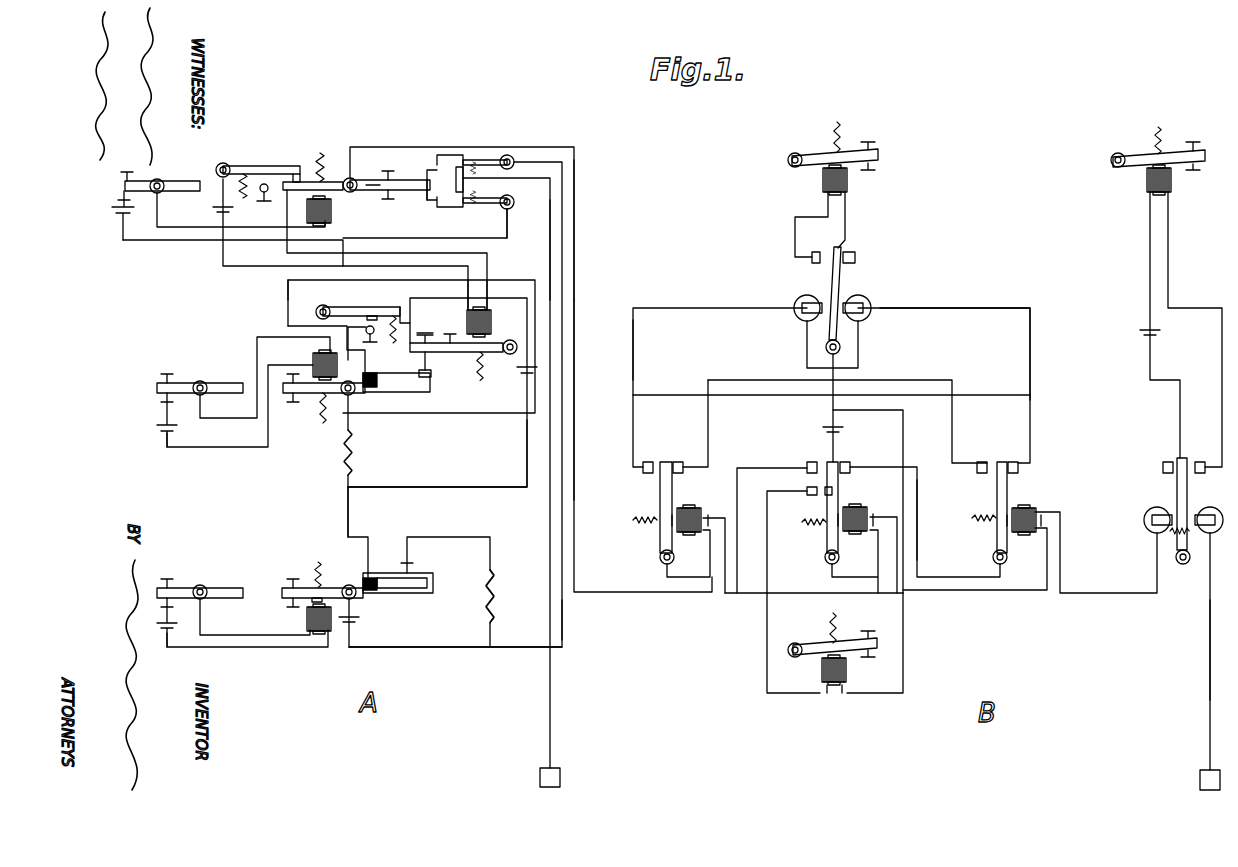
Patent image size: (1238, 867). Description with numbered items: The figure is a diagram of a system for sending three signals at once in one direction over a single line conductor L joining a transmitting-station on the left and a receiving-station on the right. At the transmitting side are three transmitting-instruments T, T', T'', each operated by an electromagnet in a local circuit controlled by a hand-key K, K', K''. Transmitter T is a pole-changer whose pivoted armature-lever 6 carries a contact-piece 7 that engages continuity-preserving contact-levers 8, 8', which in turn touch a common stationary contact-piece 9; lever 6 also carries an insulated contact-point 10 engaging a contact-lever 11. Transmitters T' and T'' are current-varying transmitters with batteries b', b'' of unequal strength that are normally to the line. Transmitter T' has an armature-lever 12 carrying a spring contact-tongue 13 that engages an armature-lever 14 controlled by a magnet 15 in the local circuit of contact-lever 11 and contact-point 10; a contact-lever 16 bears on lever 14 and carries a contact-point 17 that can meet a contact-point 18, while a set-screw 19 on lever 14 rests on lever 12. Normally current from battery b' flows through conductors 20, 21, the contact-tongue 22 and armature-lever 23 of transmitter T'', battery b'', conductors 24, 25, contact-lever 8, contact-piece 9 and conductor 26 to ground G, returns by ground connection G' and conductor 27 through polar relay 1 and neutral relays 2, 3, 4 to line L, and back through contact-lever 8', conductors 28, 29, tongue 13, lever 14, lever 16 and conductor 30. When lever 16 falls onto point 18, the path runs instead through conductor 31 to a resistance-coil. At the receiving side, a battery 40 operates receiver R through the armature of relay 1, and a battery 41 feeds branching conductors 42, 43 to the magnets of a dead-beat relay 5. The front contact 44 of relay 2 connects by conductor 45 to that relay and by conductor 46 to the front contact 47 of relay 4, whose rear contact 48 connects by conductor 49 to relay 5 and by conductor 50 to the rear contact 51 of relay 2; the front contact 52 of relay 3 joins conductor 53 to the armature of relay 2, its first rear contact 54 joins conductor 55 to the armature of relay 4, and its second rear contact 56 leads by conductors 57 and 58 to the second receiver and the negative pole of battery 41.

The polar relay 1 is at (1183, 511).
The neutral relay 2 is at (1007, 513).
The neutral relay 3 is at (837, 513).
The neutral relay 4 is at (670, 513).
The dead-beat relay 5 is at (841, 300).
The armature-lever 6 is at (366, 185).
The contact-piece 7 is at (424, 192).
The continuity-preserving contact-lever 8 is at (479, 144).
The continuity-preserving contact-lever 8' is at (479, 210).
The stationary contact-piece 9 is at (451, 181).
The contact-point 10 is at (308, 211).
The continuity-preserving contact-lever 11 is at (284, 167).
The armature-lever 12 is at (390, 392).
The spring contact-tongue 13 is at (428, 379).
The armature-lever 14 is at (463, 352).
The magnet 15 is at (492, 321).
The contact-lever 16 is at (345, 303).
The contact-point 17 is at (375, 314).
The contact-point 18 is at (374, 342).
The set-screw 19 is at (426, 335).
The conductor 20 is at (437, 453).
The conductor 21 is at (360, 512).
The contact-tongue 22 is at (402, 576).
The armature-lever 23 is at (424, 593).
The conductor 24 is at (455, 658).
The conductor 25 is at (575, 188).
The conductor 26 is at (549, 245).
The conductor 27 is at (1198, 650).
The conductor 28 is at (508, 222).
The conductor 29 is at (339, 365).
The conductor 30 is at (469, 316).
The conductor 31 is at (320, 295).
The battery 40 is at (1136, 324).
The battery 41 is at (825, 422).
The branching conductor 42 is at (865, 327).
The branching conductor 43 is at (801, 327).
The front contact 44 is at (1013, 461).
The conductor 45 is at (967, 352).
The conductor 46 is at (847, 412).
The front contact 47 is at (677, 461).
The rear contact 48 is at (649, 475).
The conductor 49 is at (644, 350).
The conductor 50 is at (831, 386).
The rear contact 51 is at (983, 475).
The front contact 52 is at (846, 461).
The conductor 53 is at (918, 519).
The first rear contact 54 is at (810, 461).
The conductor 55 is at (768, 520).
The second rear contact 56 is at (808, 497).
The conductor 57 is at (793, 643).
The conductor 58 is at (906, 646).
The hand-key K is at (141, 206).
The hand-key K' is at (184, 410).
The hand-key K'' is at (244, 604).
The pole-changing transmitter T is at (386, 193).
The current-varying transmitter T' is at (338, 386).
The current-varying transmitter T'' is at (322, 584).
The receiving-instrument R is at (1158, 165).
The battery b' is at (521, 381).
The battery b'' is at (363, 627).
The ground G is at (560, 775).
The ground connection G' is at (1197, 776).
The line conductor L is at (583, 400).